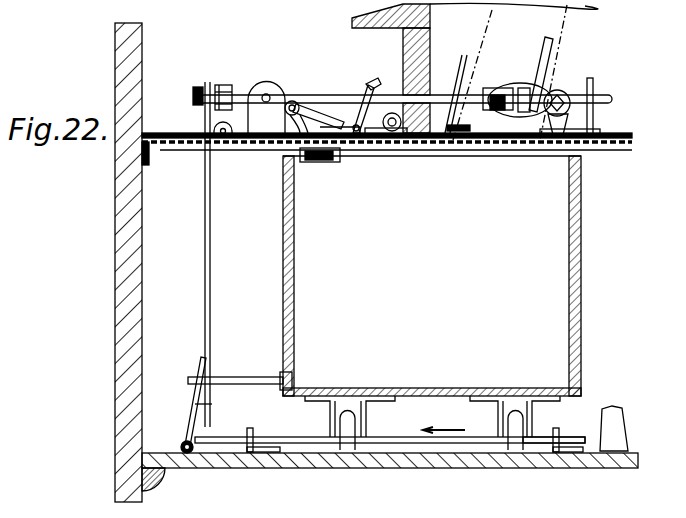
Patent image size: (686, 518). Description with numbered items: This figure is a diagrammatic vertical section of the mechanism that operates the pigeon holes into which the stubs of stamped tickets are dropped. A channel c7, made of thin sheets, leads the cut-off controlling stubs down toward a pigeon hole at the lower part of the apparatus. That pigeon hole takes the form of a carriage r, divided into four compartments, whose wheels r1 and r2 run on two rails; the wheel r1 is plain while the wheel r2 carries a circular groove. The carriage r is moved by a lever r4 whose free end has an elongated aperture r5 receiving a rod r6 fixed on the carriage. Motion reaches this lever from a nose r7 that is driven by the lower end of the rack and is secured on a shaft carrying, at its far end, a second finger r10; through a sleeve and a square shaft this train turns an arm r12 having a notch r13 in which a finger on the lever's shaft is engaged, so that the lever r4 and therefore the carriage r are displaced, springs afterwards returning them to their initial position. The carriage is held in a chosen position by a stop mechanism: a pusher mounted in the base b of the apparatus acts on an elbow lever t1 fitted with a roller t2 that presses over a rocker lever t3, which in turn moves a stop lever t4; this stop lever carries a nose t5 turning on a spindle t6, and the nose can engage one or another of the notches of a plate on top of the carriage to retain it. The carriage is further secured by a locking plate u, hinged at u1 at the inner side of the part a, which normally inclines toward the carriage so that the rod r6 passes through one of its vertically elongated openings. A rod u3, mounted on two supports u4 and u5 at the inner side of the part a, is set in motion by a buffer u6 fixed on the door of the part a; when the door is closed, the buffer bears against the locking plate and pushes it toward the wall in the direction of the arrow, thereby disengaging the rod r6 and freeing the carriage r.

The part a is at (125, 318).
The base b is at (403, 52).
The channel c7 is at (480, 45).
The carriage r is at (581, 268).
The wheel r1 is at (515, 452).
The wheel r2 is at (348, 452).
The lever r4 is at (205, 258).
The elongated aperture r5 is at (210, 404).
The rod r6 is at (248, 377).
The nose r7 is at (582, 97).
The second finger r10 is at (560, 125).
The arm r12 is at (546, 78).
The notch r13 is at (490, 88).
The elbow lever t1 is at (362, 90).
The roller t2 is at (290, 101).
The rocker lever t3 is at (300, 114).
The stop lever t4 is at (247, 90).
The nose t5 is at (333, 162).
The spindle t6 is at (224, 150).
The locking plate u is at (203, 360).
The hinge u1 is at (181, 445).
The rod u3 is at (300, 445).
The support u4 is at (255, 453).
The support u5 is at (556, 453).
The buffer u6 is at (614, 407).